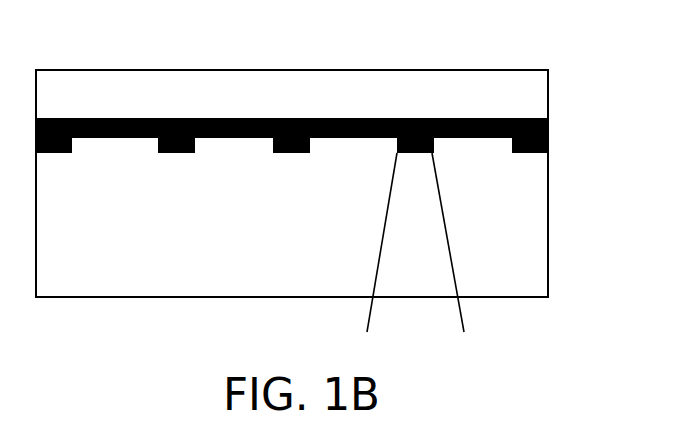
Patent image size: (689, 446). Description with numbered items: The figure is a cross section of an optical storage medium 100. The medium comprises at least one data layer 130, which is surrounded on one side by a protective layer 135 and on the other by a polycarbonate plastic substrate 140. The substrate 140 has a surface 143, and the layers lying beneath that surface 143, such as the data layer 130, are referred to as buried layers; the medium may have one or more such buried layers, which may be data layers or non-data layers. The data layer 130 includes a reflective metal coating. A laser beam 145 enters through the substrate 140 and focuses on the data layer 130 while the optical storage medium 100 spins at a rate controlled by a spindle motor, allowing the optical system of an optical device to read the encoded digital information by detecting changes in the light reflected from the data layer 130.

The optical storage medium 100 is at (390, 70).
The protective layer 135 is at (548, 91).
The data layer 130 is at (548, 140).
The polycarbonate plastic substrate 140 is at (548, 217).
The laser beam 145 is at (432, 240).
The surface 143 is at (503, 297).